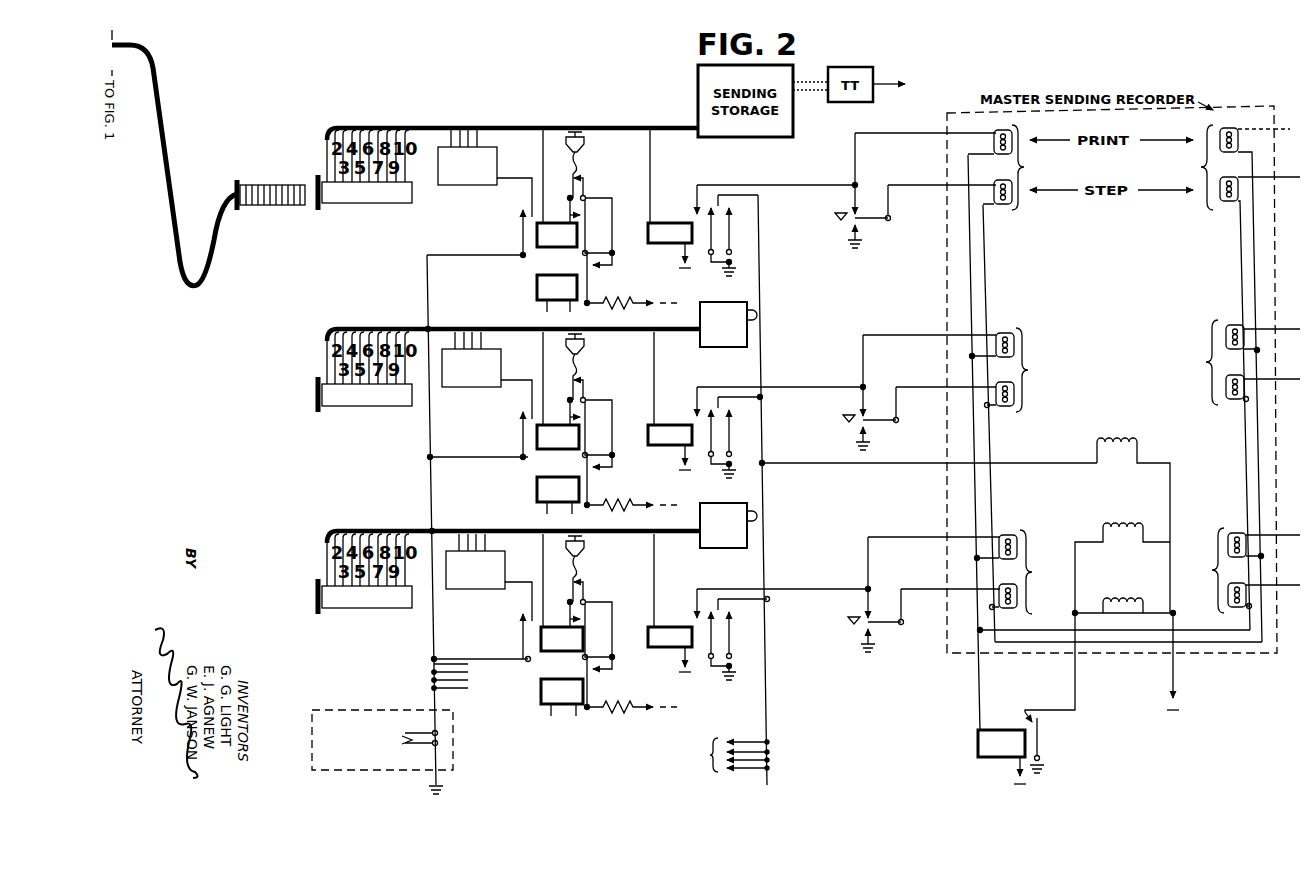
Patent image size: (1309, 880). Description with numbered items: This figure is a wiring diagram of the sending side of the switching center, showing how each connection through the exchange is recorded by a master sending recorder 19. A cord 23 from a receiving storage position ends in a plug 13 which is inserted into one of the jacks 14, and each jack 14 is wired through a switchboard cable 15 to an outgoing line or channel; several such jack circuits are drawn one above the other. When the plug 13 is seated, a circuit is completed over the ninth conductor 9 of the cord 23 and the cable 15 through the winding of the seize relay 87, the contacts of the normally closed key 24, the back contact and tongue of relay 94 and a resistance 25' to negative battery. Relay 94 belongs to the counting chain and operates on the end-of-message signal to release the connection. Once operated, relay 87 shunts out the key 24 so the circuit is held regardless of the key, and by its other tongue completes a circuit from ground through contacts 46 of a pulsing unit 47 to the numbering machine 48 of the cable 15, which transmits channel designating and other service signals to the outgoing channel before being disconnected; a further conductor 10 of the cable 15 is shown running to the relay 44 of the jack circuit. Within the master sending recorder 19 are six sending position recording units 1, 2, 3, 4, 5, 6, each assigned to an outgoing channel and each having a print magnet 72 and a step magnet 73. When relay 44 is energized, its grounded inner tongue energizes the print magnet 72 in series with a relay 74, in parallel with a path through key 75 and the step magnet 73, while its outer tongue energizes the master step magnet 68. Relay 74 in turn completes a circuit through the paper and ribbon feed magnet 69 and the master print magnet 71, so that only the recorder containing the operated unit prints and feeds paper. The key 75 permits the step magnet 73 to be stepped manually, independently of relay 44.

The sending recording unit 1 is at (1022, 167).
The sending recording unit 2 is at (1004, 370).
The sending recording unit 3 is at (1008, 572).
The sending recording unit 4 is at (1214, 167).
The sending recording unit 5 is at (1247, 362).
The sending recording unit 6 is at (1251, 570).
The ninth conductor 9 is at (540, 378).
The conductor 10 is at (656, 124).
The plug 13 is at (265, 207).
The jack 14 is at (345, 204).
The switchboard cable 15 is at (440, 125).
The master sending recorder 19 is at (1226, 653).
The cord 23 is at (182, 135).
The normally closed key 24 is at (580, 175).
The resistance 25' is at (632, 494).
The relay 44 is at (671, 226).
The contacts 46 is at (407, 745).
The pulsing unit 47 is at (388, 710).
The numbering machine 48 is at (468, 182).
The master step magnet 68 is at (1138, 446).
The paper and ribbon feed magnet 69 is at (1143, 528).
The master print magnet 71 is at (1143, 601).
The print magnet 72 is at (1232, 325).
The step magnet 73 is at (1232, 422).
The relay 74 is at (999, 728).
The key 75 is at (838, 224).
The seize relay 87 is at (556, 231).
The relay 94 is at (560, 282).